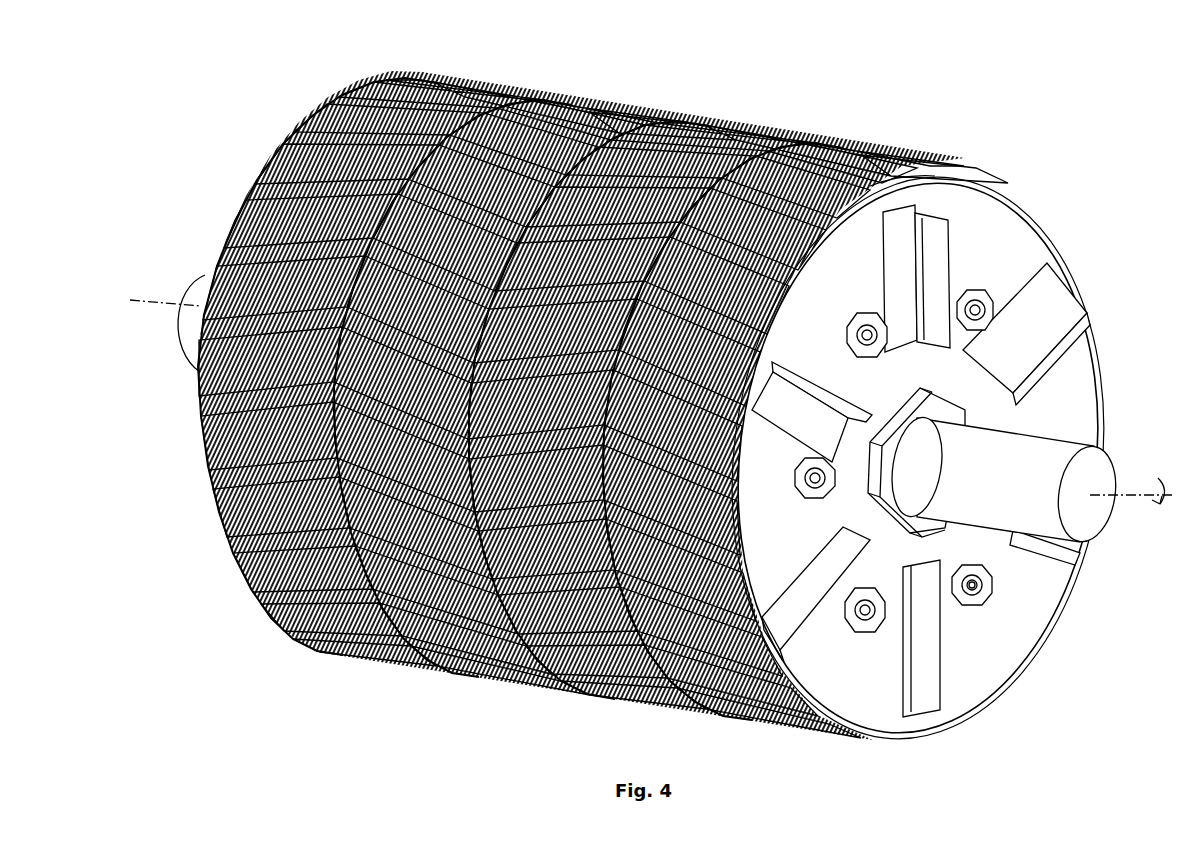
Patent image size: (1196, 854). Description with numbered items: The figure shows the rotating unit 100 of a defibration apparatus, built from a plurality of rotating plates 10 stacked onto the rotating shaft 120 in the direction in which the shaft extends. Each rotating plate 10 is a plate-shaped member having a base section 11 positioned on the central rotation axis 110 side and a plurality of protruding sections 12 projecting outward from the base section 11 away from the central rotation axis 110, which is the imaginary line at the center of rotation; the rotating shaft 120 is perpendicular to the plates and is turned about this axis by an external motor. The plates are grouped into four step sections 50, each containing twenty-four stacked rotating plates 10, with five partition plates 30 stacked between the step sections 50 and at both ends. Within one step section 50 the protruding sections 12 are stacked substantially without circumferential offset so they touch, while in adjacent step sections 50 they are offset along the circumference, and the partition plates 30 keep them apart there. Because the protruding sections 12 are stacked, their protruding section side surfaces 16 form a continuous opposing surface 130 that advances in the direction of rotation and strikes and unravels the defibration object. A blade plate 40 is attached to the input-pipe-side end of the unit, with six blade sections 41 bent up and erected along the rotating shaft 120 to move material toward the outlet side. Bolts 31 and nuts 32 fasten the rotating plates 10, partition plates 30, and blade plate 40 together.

The rotating plate 10 is at (586, 409).
The base section 11 is at (265, 256).
The protruding section 12 is at (270, 160).
The protruding section side surface 16 is at (897, 162).
The partition plate 30 is at (258, 195).
The bolt 31 is at (992, 588).
The nut 32 is at (968, 600).
The blade plate 40 is at (1062, 393).
The blade section 41 is at (1060, 326).
The step section 50 is at (693, 106).
The rotating unit 100 is at (1083, 120).
The central rotation axis 110 is at (135, 302).
The rotating shaft 120 is at (1085, 522).
The opposing surface 130 is at (810, 150).